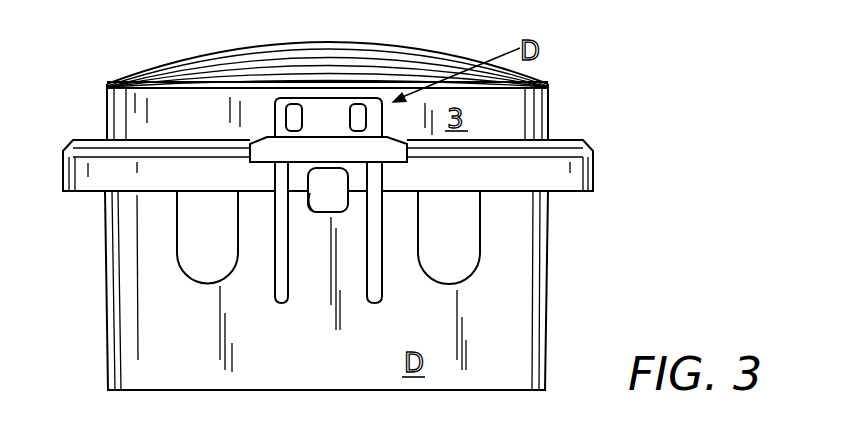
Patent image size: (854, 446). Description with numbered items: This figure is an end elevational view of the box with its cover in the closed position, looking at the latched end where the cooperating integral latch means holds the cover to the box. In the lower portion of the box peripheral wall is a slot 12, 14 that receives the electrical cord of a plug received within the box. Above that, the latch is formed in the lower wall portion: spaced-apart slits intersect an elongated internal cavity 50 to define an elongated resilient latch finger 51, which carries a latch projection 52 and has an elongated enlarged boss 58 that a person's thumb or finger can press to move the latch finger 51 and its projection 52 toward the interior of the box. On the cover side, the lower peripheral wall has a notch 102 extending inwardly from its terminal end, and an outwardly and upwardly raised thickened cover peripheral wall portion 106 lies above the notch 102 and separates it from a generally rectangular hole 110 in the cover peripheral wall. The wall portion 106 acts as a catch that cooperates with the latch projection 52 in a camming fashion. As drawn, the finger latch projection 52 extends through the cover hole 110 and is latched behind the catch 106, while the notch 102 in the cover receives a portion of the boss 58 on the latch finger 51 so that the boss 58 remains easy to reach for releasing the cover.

The slot 12 is at (180, 238).
The slot 14 is at (470, 245).
The internal cavity 50 is at (360, 107).
The latch finger 51 is at (328, 110).
The latch projection 52 is at (293, 107).
The boss 58 is at (309, 199).
The notch 102 is at (376, 169).
The thickened cover peripheral wall portion 106 is at (267, 145).
The hole 110 is at (277, 118).